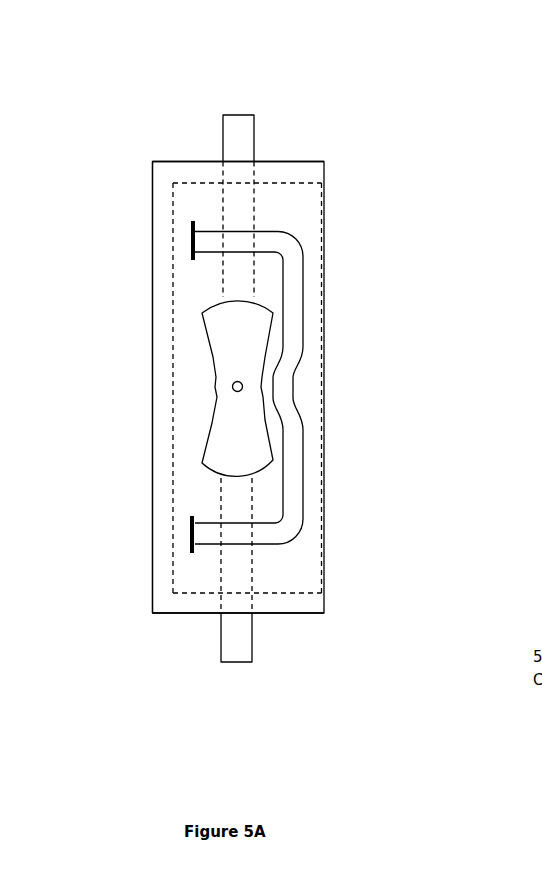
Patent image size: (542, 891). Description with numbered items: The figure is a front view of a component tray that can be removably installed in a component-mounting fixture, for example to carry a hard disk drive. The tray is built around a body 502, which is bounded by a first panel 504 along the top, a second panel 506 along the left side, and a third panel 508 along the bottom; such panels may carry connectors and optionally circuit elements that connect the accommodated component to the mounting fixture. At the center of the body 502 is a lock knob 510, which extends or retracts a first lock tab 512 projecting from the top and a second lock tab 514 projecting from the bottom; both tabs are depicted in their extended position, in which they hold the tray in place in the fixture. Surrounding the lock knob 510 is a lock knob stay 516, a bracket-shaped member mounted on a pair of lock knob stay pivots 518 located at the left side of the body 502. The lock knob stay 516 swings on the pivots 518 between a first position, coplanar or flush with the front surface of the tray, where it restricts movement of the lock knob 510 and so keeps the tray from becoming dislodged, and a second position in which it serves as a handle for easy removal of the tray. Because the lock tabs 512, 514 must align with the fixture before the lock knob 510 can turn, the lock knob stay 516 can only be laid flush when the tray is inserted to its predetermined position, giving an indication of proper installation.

The body 502 is at (333, 155).
The first panel 504 is at (193, 173).
The second panel 506 is at (163, 228).
The third panel 508 is at (282, 603).
The lock knob 510 is at (253, 340).
The first lock tab 512 is at (255, 103).
The second lock tab 514 is at (260, 670).
The lock knob stay 516 is at (292, 447).
The lock knob stay pivots 518 is at (119, 387).